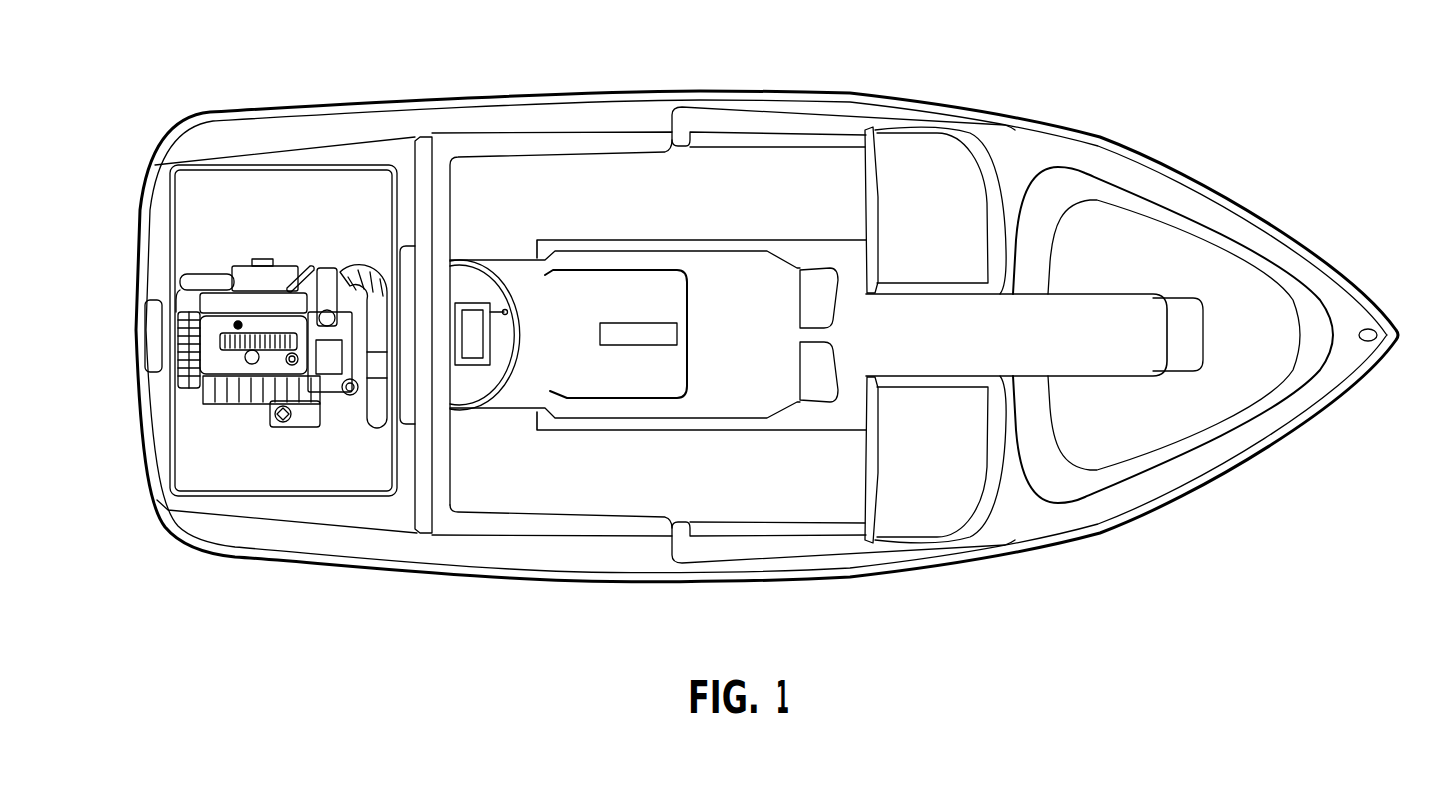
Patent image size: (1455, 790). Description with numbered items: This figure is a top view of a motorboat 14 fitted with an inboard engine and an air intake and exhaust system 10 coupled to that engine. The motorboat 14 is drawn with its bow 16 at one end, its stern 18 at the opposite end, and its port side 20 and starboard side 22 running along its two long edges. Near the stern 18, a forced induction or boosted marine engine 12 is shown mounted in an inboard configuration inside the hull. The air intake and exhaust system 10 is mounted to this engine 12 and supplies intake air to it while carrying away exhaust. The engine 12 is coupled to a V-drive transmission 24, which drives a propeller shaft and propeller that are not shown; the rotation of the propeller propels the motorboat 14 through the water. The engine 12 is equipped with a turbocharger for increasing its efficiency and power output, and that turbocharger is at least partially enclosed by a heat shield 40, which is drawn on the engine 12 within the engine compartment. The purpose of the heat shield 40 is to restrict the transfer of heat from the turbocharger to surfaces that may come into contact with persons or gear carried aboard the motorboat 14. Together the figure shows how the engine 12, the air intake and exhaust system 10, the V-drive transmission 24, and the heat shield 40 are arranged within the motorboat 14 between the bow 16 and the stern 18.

The air intake and exhaust system 10 is at (358, 264).
The marine engine 12 is at (272, 236).
The motorboat 14 is at (1049, 118).
The bow 16 is at (1400, 335).
The stern 18 is at (137, 336).
The port side 20 is at (681, 88).
The starboard side 22 is at (689, 584).
The V-drive transmission 24 is at (498, 336).
The heat shield 40 is at (243, 262).